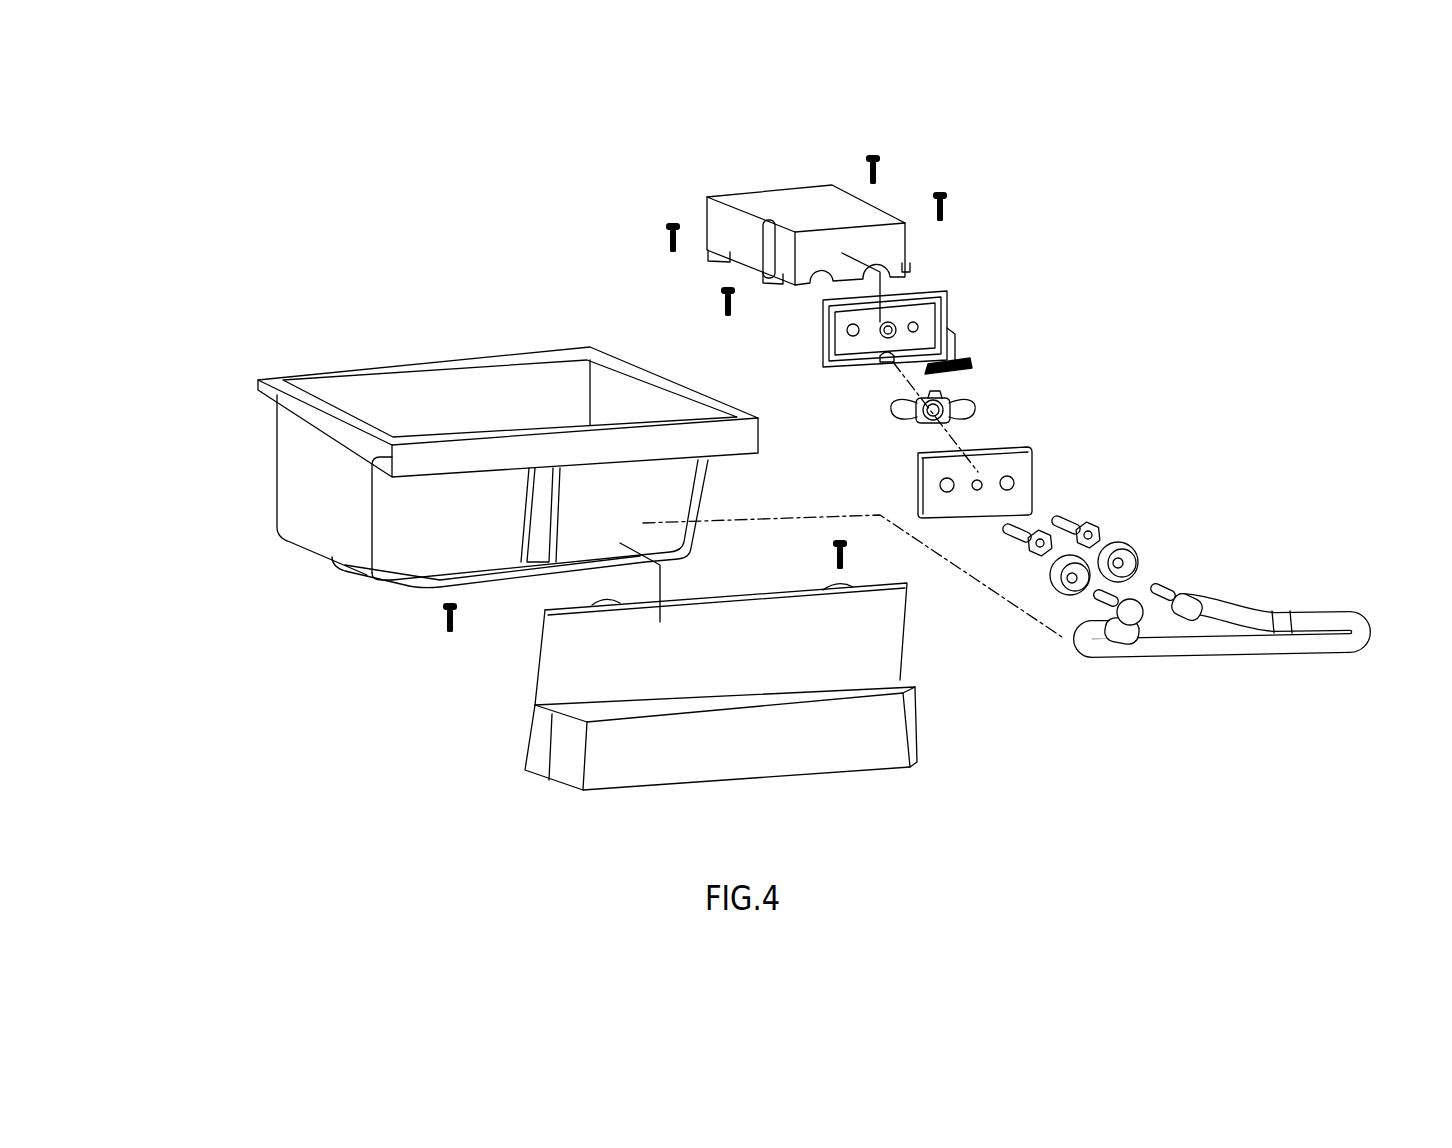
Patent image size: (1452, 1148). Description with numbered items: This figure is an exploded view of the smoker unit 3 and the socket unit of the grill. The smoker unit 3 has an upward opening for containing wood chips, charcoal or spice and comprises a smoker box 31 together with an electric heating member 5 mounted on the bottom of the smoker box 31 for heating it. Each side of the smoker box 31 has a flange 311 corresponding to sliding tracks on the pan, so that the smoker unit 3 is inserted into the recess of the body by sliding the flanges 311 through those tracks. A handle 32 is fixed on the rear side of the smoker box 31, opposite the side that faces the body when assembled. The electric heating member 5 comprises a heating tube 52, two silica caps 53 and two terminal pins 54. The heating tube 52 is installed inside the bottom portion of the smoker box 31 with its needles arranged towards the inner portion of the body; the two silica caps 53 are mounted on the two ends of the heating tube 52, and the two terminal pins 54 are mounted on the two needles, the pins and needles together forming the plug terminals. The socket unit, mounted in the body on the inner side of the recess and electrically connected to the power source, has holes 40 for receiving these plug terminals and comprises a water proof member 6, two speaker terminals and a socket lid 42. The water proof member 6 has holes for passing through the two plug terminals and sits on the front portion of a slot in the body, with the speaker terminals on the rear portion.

The smoker unit 3 is at (322, 357).
The smoker box 31 is at (503, 358).
The flange 311 is at (318, 410).
The handle 32 is at (648, 672).
The holes 40 is at (945, 483).
The socket lid 42 is at (767, 203).
The water proof member 6 is at (1047, 450).
The terminal pins 54 is at (1097, 533).
The electric heating member 5 is at (1337, 597).
The heating tube 52 is at (1293, 647).
The silica caps 53 is at (1130, 580).